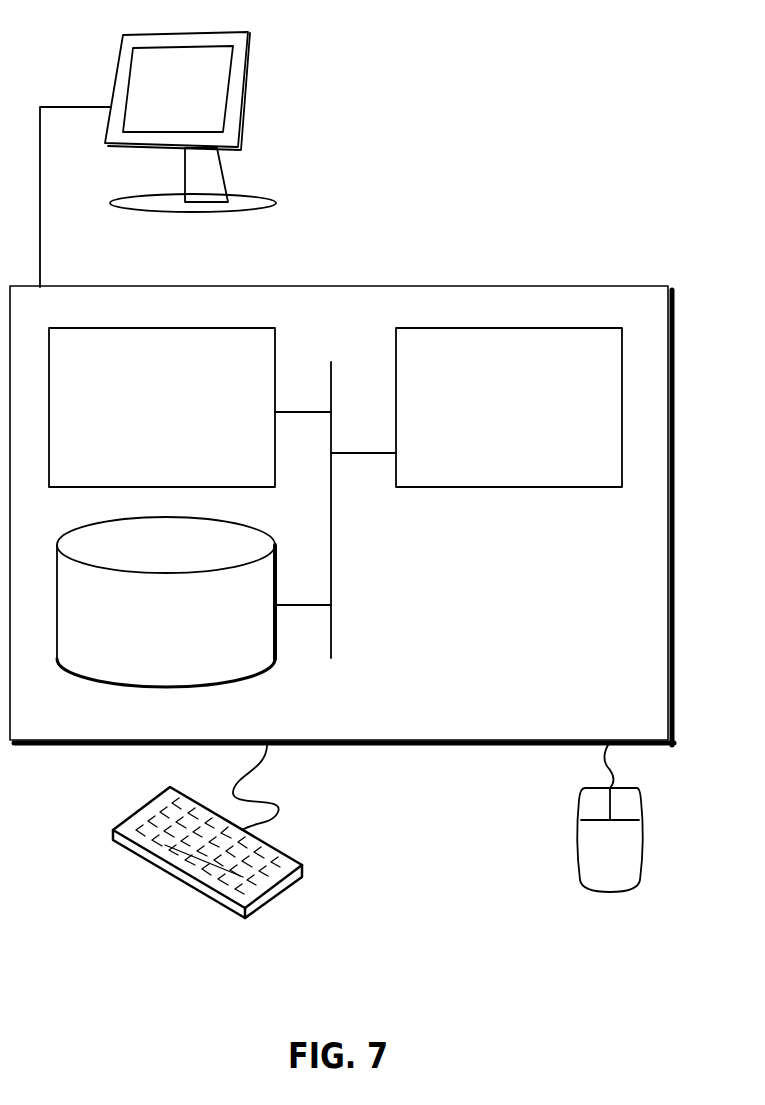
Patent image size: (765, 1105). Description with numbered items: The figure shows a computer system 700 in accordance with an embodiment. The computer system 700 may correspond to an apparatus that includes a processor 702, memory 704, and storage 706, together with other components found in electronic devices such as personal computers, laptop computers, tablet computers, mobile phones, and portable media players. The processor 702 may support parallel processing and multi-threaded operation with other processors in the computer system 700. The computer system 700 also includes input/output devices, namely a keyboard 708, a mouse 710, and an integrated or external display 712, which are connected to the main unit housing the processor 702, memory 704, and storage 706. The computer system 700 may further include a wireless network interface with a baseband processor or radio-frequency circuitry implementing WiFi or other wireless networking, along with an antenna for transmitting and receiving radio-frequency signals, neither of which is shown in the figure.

The computer system 700 is at (386, 263).
The processor 702 is at (533, 422).
The memory 704 is at (183, 421).
The storage 706 is at (189, 634).
The keyboard 708 is at (132, 848).
The mouse 710 is at (630, 864).
The display 712 is at (158, 159).